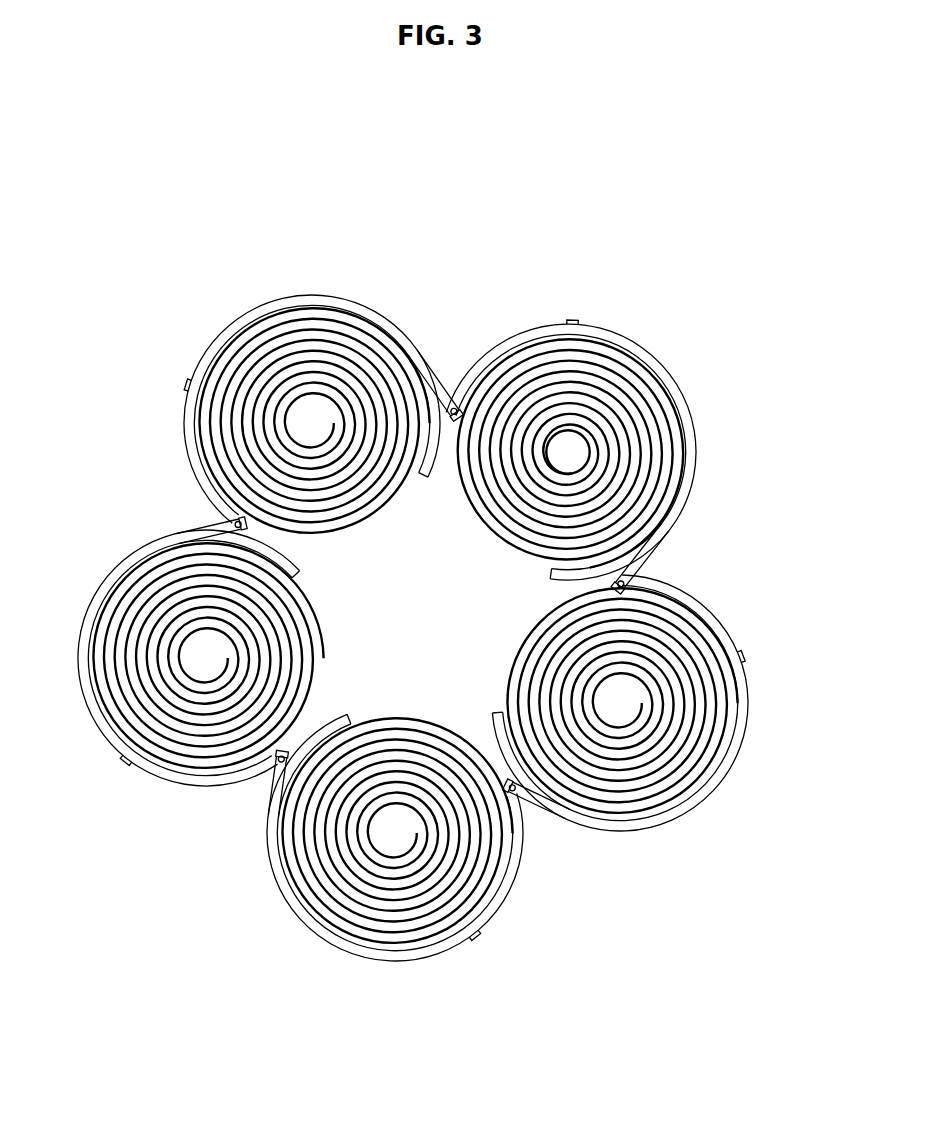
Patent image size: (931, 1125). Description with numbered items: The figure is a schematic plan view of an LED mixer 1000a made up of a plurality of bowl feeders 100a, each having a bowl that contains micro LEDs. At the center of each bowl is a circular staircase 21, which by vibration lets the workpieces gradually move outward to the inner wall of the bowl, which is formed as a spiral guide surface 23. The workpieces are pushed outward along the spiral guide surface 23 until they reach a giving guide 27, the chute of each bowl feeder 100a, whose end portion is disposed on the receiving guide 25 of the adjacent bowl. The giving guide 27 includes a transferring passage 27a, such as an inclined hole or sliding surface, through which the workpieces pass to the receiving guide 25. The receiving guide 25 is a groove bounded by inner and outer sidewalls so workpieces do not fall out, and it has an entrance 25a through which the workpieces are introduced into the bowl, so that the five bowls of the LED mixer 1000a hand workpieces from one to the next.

The LED mixer 1000a is at (771, 221).
The bowl feeder 100a is at (310, 278).
The transferring passage 27a is at (448, 408).
The spiral guide surface 23 is at (540, 395).
The circular staircase 21 is at (603, 451).
The giving guide 27 is at (655, 551).
The receiving guide 25 is at (700, 607).
The entrance 25a is at (726, 655).